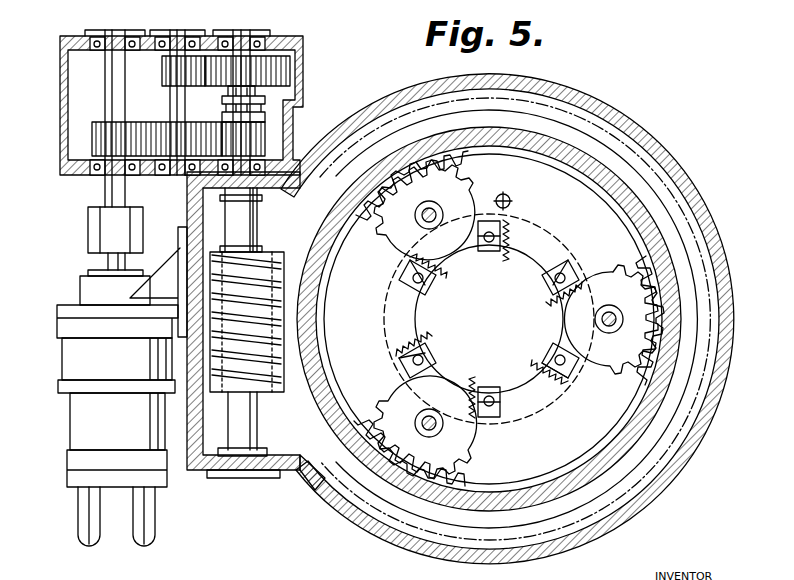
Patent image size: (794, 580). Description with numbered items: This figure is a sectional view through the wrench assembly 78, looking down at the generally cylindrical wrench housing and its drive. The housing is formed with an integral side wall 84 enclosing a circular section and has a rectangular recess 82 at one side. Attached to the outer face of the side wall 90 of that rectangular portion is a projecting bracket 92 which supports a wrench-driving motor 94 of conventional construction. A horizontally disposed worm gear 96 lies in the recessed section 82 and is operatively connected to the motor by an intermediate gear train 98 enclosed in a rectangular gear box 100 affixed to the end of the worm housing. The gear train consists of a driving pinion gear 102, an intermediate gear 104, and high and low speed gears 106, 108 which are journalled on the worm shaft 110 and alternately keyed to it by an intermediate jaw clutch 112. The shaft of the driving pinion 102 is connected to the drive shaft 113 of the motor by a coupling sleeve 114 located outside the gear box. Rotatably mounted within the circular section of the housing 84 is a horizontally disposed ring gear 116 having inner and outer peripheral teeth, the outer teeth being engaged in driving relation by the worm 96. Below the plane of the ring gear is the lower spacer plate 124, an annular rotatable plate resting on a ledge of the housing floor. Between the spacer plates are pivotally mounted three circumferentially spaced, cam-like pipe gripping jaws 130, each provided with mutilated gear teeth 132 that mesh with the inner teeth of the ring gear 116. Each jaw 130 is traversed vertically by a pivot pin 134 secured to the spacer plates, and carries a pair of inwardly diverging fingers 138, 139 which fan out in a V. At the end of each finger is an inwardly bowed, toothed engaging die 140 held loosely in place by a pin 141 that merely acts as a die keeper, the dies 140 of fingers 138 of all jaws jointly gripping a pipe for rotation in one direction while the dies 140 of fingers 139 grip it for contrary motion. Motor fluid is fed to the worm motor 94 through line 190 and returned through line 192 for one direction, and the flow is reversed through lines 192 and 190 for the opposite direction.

The wrench assembly 78 is at (590, 140).
The rectangular recess 82 is at (214, 436).
The side wall 84 is at (690, 160).
The side wall of the rectangular portion 90 is at (190, 190).
The projecting bracket 92 is at (72, 306).
The wrench-driving motor 94 is at (80, 423).
The worm gear 96 is at (218, 342).
The intermediate gear train 98 is at (88, 100).
The gear box 100 is at (78, 36).
The driving pinion gear 102 is at (95, 136).
The intermediate gear 104 is at (168, 84).
The high speed gear 106 is at (268, 136).
The low speed gear 108 is at (280, 66).
The worm shaft 110 is at (232, 220).
The intermediate jaw clutch 112 is at (260, 102).
The drive shaft of the motor 113 is at (110, 268).
The coupling sleeve 114 is at (95, 225).
The ring gear 116 is at (665, 228).
The lower spacer plate 124 is at (655, 352).
The pipe gripping jaw 130 is at (458, 256).
The mutilated gear teeth 132 is at (447, 177).
The pivot pin 134 is at (445, 212).
The finger 138 is at (545, 290).
The finger 139 is at (484, 294).
The engaging die 140 is at (530, 242).
The pin 141 is at (400, 290).
The line 190 is at (80, 507).
The line 192 is at (132, 528).